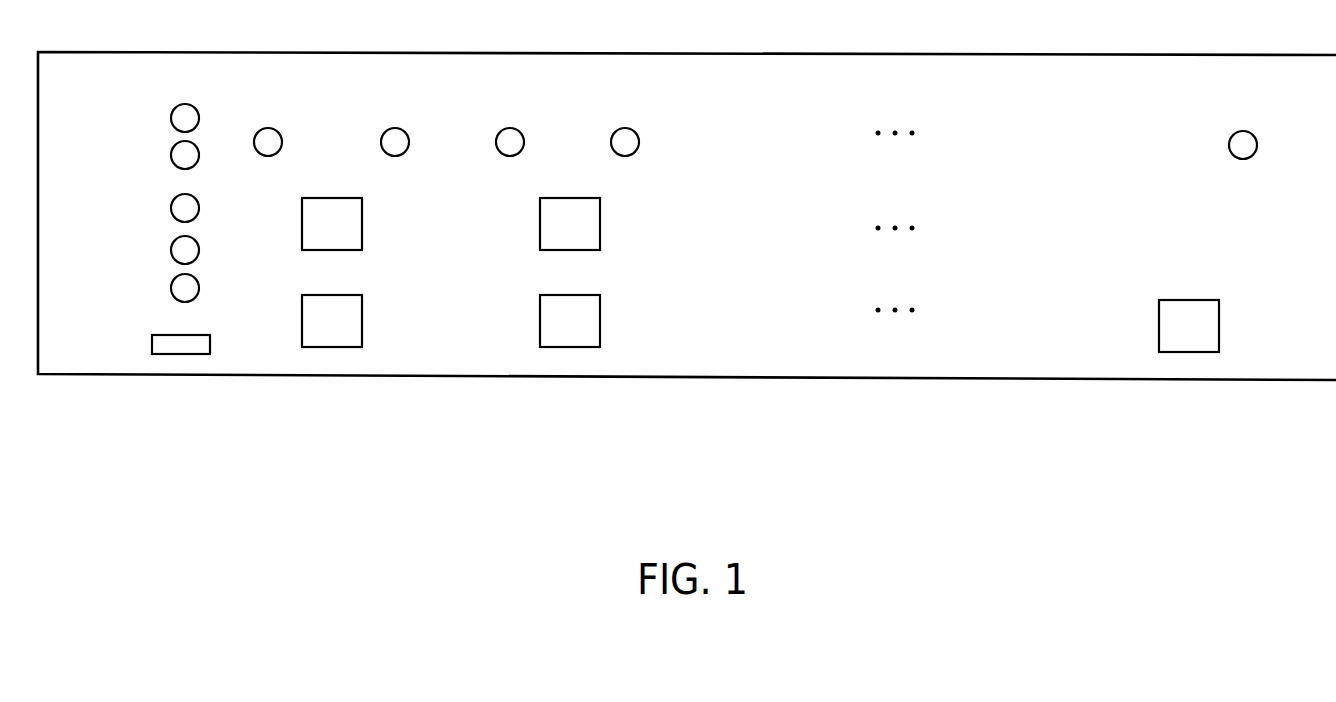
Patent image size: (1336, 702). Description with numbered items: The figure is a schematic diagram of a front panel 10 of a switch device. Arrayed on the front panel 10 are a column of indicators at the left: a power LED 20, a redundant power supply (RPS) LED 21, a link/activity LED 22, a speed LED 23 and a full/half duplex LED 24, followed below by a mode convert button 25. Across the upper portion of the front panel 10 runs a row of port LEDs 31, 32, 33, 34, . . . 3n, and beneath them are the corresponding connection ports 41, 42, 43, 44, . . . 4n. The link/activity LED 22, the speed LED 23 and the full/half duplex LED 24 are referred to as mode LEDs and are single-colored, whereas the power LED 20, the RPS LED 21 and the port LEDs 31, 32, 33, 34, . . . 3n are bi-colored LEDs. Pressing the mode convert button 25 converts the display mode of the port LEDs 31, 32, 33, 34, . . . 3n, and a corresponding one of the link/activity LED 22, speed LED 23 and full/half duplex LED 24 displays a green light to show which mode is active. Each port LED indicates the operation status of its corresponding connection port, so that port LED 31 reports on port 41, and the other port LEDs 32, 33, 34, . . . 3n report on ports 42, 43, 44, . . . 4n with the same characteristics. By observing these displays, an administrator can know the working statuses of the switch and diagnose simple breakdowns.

The front panel 10 is at (693, 378).
The power LED 20 is at (171, 118).
The redundant power supply (RPS) LED 21 is at (171, 155).
The link/activity LED 22 is at (171, 208).
The speed LED 23 is at (171, 250).
The full/half duplex LED 24 is at (171, 288).
The mode convert button 25 is at (152, 345).
The port LED 31 is at (265, 129).
The port LED 32 is at (392, 129).
The port LED 33 is at (507, 129).
The port LED 34 is at (622, 129).
The port LED 3n is at (1240, 132).
The connection port 41 is at (328, 198).
The connection port 42 is at (328, 295).
The connection port 43 is at (566, 198).
The connection port 44 is at (566, 295).
The connection port 4n is at (1185, 300).